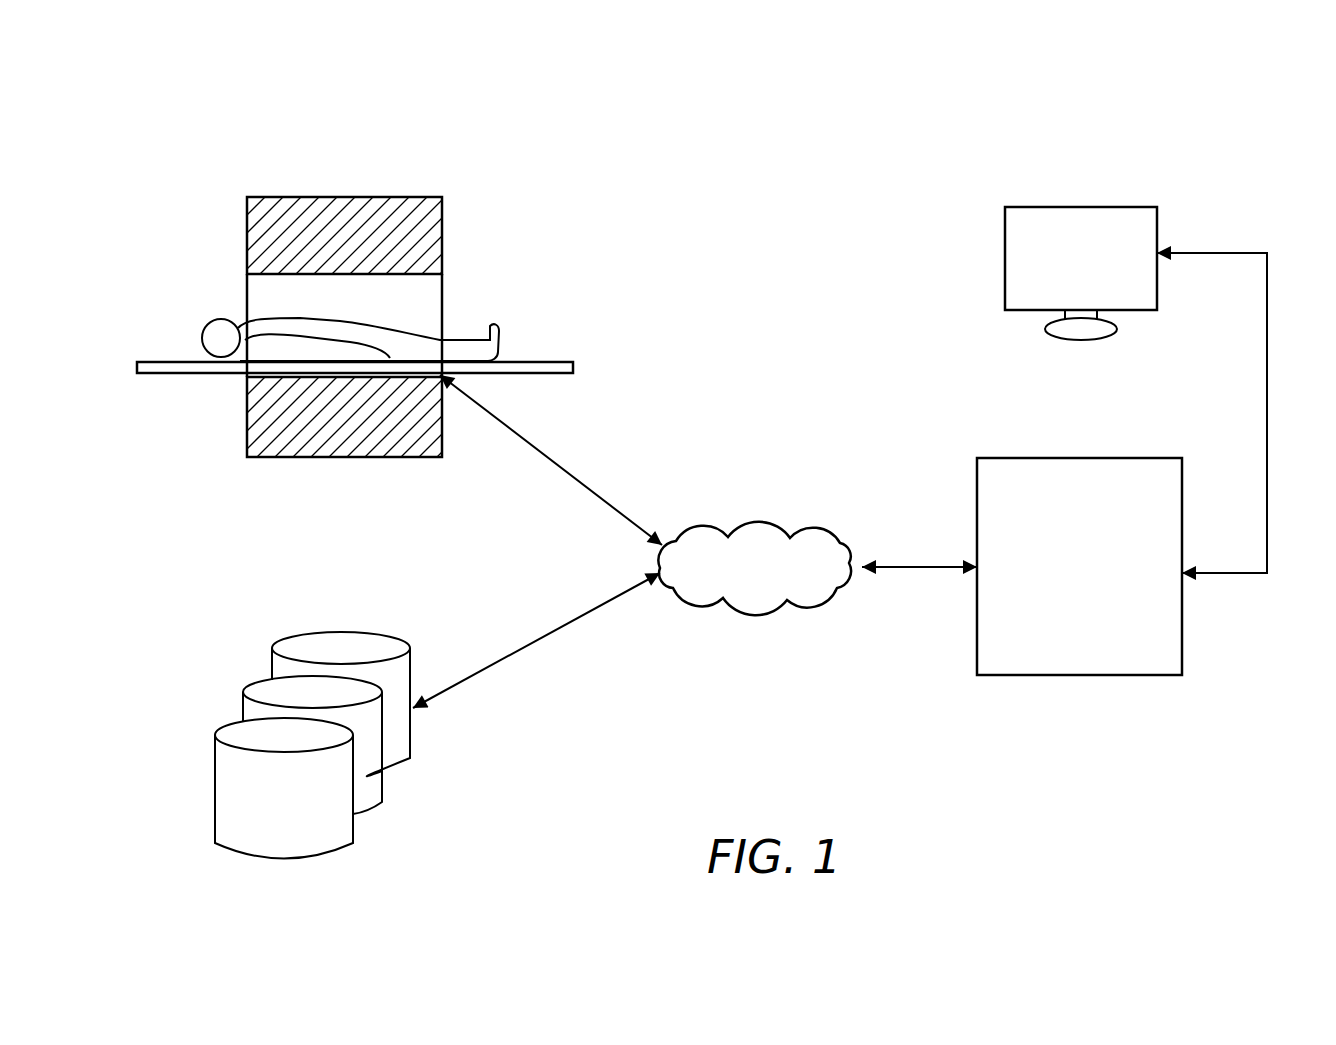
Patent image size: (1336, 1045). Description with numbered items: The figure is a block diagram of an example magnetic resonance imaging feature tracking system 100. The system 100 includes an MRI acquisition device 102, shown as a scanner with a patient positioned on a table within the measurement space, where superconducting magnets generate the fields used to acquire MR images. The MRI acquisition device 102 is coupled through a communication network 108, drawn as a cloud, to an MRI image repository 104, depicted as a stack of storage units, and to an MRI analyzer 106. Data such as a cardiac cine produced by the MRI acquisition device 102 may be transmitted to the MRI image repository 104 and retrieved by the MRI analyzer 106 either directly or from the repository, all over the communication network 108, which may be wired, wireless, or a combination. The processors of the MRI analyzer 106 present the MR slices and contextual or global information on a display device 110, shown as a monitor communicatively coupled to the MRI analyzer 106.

The MRI feature tracking system 100 is at (783, 112).
The MRI acquisition device 102 is at (318, 218).
The MRI image repository 104 is at (300, 823).
The MRI analyzer 106 is at (1077, 655).
The communication network 108 is at (767, 585).
The display device 110 is at (1062, 225).